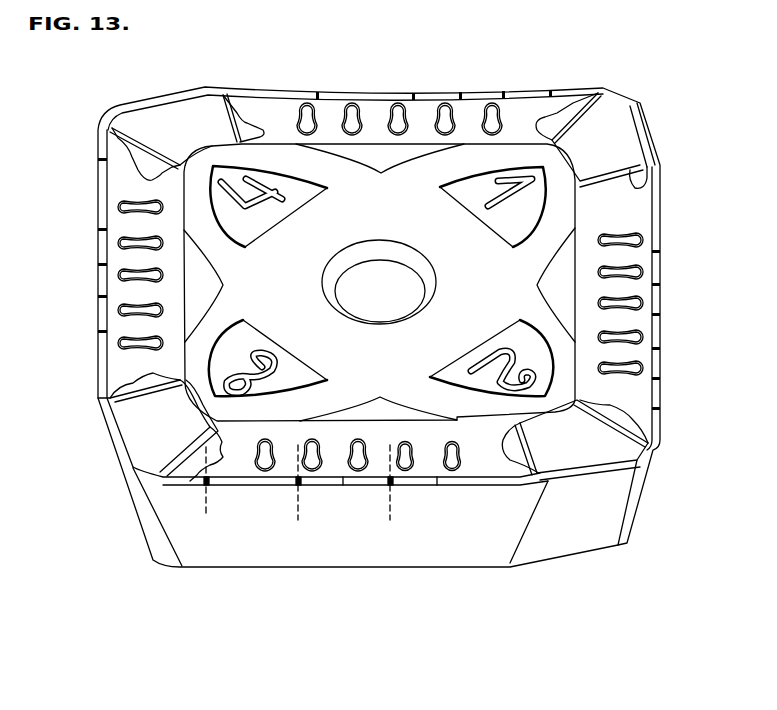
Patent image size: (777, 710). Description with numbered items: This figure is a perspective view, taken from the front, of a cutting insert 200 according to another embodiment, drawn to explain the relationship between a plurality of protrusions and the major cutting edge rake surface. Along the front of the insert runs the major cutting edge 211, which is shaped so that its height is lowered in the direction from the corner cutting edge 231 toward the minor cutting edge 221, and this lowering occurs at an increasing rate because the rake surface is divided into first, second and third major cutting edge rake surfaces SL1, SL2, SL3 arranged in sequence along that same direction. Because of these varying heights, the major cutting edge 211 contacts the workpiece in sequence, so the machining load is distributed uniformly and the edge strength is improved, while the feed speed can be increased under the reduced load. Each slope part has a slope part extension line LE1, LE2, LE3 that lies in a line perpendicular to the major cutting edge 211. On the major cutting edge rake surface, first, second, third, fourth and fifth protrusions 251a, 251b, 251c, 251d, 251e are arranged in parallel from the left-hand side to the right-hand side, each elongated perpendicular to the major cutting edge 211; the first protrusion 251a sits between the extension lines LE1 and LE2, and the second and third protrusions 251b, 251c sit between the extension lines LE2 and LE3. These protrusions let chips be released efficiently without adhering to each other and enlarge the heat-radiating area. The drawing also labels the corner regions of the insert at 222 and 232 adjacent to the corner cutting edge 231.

The tray assembly 200 is at (657, 83).
The minor cutting edge 221 is at (104, 428).
The corner flange 222 is at (110, 447).
The upper bent edge 232 is at (130, 466).
The corner cutting edge 231 is at (132, 480).
The major cutting edge 211 is at (162, 530).
The first major cutting edge rake surface SL1 is at (206, 520).
The second major cutting edge rake surface SL2 is at (298, 520).
The third major cutting edge rake surface SL3 is at (391, 520).
The slope part extension line LE1 is at (206, 488).
The slope part extension line LE2 is at (300, 488).
The slope part extension line LE3 is at (392, 488).
The first protrusion 251a is at (267, 470).
The second protrusion 251b is at (313, 470).
The third protrusion 251c is at (358, 470).
The fourth protrusion 251d is at (405, 470).
The fifth protrusion 251e is at (452, 470).